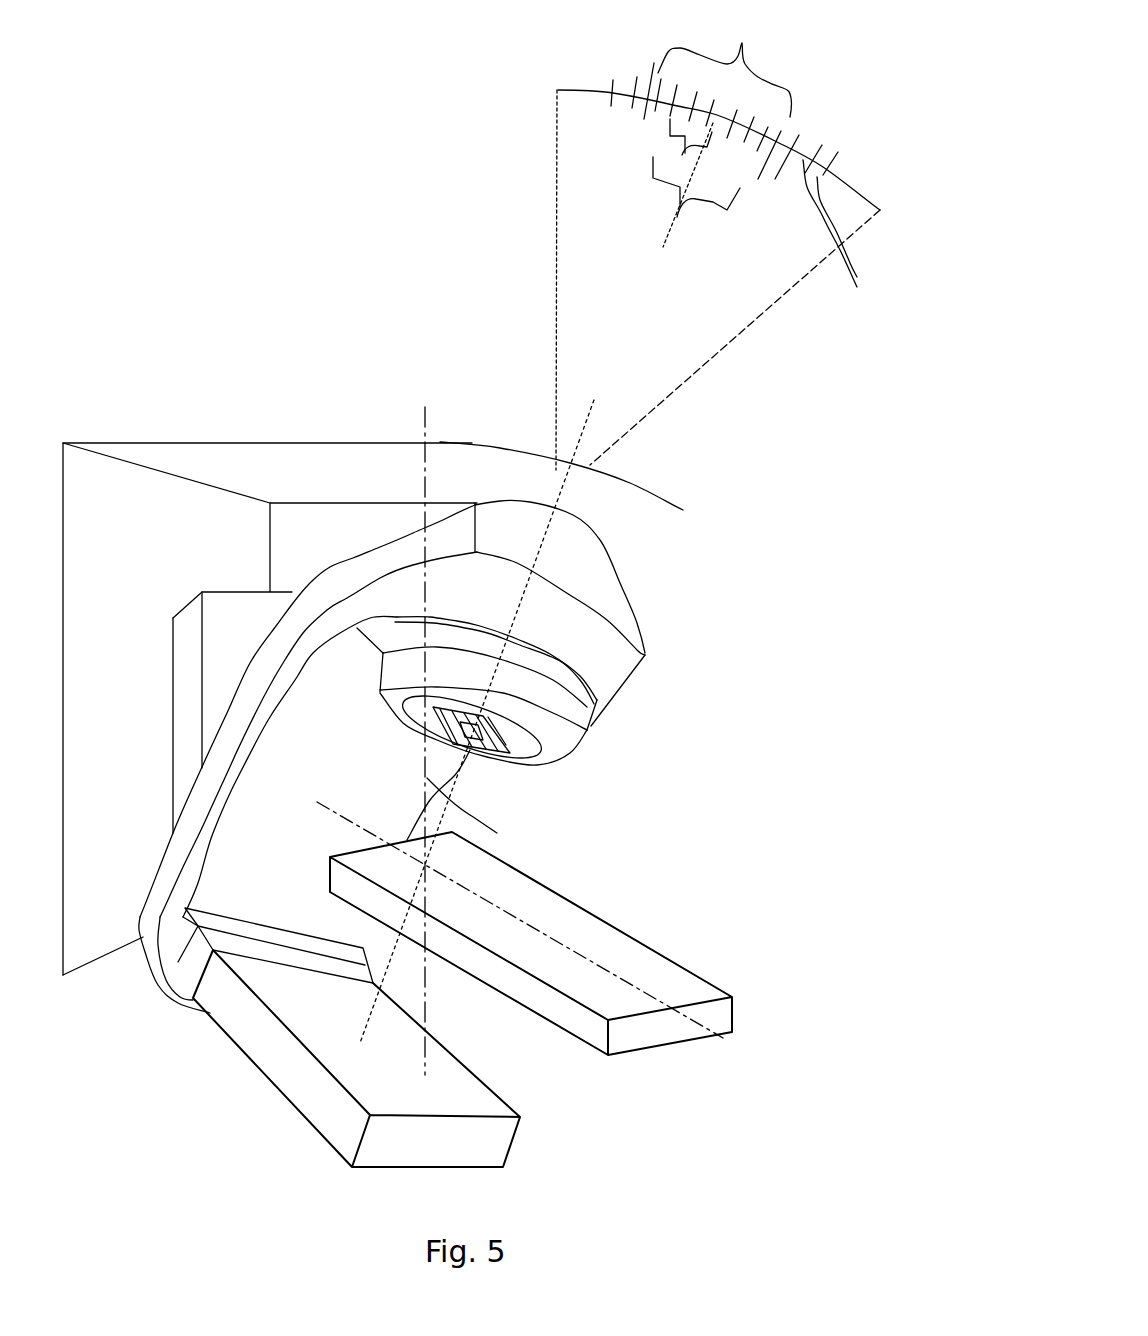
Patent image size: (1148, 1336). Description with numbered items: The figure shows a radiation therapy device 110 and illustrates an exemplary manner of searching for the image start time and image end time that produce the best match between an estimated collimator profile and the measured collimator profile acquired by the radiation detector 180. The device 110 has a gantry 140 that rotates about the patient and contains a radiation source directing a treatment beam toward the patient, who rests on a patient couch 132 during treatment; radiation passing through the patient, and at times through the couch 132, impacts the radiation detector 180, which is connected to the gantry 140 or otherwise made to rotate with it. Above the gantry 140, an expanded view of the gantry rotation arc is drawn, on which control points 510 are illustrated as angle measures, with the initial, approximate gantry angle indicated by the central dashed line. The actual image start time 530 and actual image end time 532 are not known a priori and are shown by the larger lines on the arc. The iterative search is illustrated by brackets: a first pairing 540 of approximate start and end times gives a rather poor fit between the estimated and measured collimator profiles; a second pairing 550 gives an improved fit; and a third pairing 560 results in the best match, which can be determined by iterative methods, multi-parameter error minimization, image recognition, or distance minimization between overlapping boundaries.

The radiation therapy device 110 is at (352, 548).
The patient couch 132 is at (660, 952).
The gantry 140 is at (637, 627).
The radiation detector 180 is at (510, 1147).
The control points 510 is at (665, 293).
The actual image start time 530 is at (646, 75).
The actual image end time 532 is at (798, 125).
The first pairing bracket 540 is at (682, 155).
The second pairing 550 is at (677, 217).
The third pairing 560 is at (724, 58).